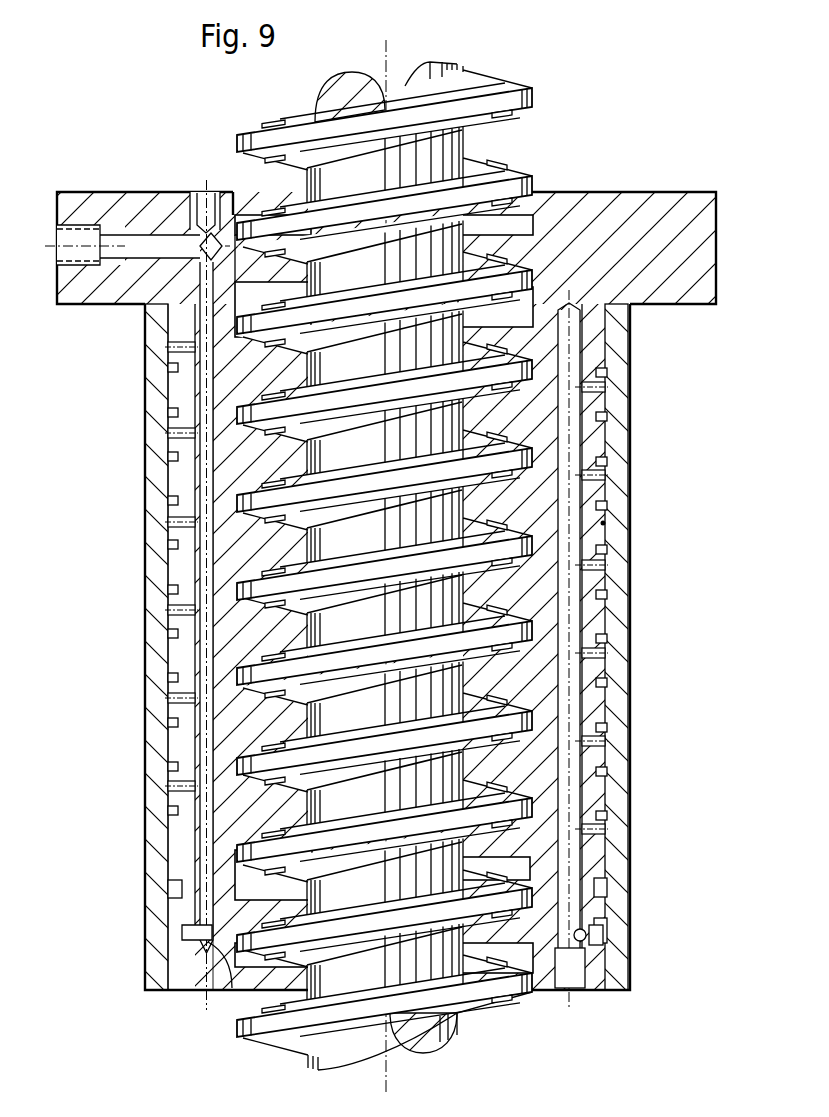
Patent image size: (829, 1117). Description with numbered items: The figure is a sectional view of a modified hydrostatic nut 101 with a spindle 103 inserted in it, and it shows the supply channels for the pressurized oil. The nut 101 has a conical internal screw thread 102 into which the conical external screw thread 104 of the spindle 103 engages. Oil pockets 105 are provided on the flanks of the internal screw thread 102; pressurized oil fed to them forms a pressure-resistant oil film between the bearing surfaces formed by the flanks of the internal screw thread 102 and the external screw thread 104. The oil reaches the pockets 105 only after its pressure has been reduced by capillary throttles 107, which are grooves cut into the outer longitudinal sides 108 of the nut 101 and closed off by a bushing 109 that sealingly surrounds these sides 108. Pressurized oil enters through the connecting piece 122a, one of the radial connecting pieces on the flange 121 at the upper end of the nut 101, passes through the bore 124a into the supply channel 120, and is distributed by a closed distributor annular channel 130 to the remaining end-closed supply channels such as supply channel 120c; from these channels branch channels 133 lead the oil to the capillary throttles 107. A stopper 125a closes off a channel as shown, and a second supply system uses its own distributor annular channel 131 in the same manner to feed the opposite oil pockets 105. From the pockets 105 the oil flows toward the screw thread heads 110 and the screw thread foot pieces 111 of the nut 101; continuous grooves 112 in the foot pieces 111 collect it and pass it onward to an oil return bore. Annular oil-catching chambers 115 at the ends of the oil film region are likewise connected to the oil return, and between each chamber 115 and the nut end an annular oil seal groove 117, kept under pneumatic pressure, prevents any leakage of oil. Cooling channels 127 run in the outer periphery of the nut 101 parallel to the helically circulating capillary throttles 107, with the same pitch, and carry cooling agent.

The hydrostatic nut 101 is at (528, 412).
The conical internal screw thread 102 is at (577, 935).
The spindle 103 is at (417, 72).
The conical external screw thread 104 is at (480, 85).
The oil pockets 105 is at (520, 428).
The capillary throttles 107 is at (603, 523).
The outer longitudinal sides 108 is at (598, 746).
The bushing 109 is at (600, 812).
The screw thread heads 110 is at (240, 556).
The screw thread foot pieces 111 is at (240, 528).
The continuous grooves 112 is at (240, 413).
The oil-catching chambers 115 is at (512, 312).
The annular oil seal groove 117 is at (245, 952).
The supply channel 120 is at (168, 650).
The supply channel 120c is at (590, 700).
The flange 121 is at (555, 215).
The connecting piece 122a is at (53, 237).
The bore 124a is at (150, 240).
The stopper 125a is at (207, 196).
The cooling channels 127 is at (168, 502).
The distributor annular channel 130 is at (145, 932).
The distributor annular channel 131 is at (168, 893).
The branch channels 133 is at (168, 712).